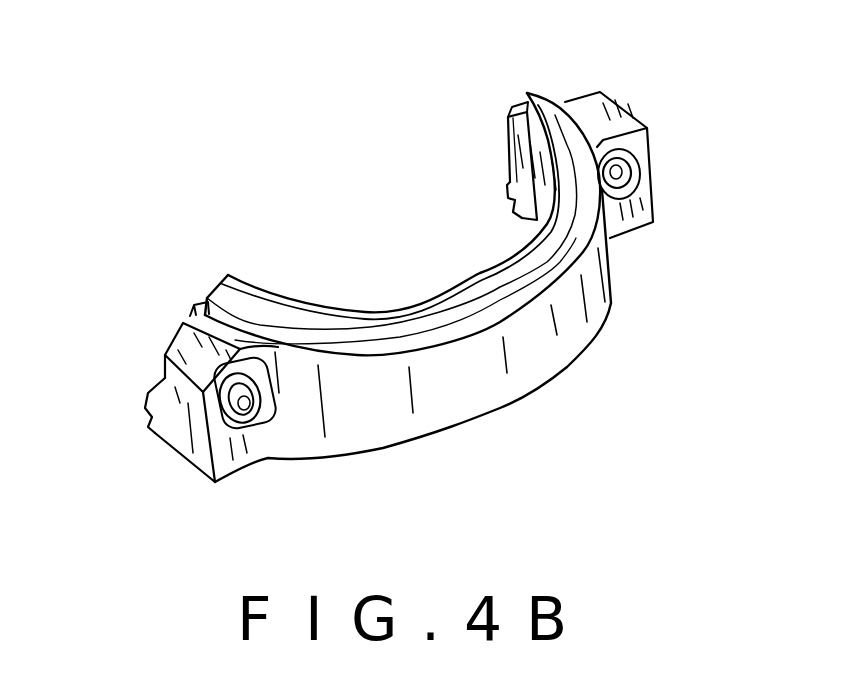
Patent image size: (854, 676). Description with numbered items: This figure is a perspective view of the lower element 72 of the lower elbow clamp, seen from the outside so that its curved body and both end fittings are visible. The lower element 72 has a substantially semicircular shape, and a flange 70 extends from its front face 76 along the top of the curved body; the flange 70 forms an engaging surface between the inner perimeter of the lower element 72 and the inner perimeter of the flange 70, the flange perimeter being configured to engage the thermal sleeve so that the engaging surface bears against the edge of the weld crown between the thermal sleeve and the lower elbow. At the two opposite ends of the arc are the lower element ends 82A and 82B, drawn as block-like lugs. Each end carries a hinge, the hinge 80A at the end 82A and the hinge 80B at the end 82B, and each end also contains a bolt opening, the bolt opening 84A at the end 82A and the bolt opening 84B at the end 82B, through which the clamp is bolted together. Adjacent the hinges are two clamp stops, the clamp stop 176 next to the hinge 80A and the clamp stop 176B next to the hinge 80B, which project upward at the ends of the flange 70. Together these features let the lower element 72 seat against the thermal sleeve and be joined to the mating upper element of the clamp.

The flange 70 is at (362, 308).
The lower element 72 is at (403, 159).
The front face 76 is at (447, 337).
The hinge 80A is at (147, 418).
The hinge 80B is at (509, 194).
The lower element end 82A is at (200, 448).
The lower element end 82B is at (630, 225).
The bolt opening 84A is at (252, 418).
The bolt opening 84B is at (622, 173).
The clamp stop 176 is at (193, 304).
The clamp stop 176B is at (517, 115).